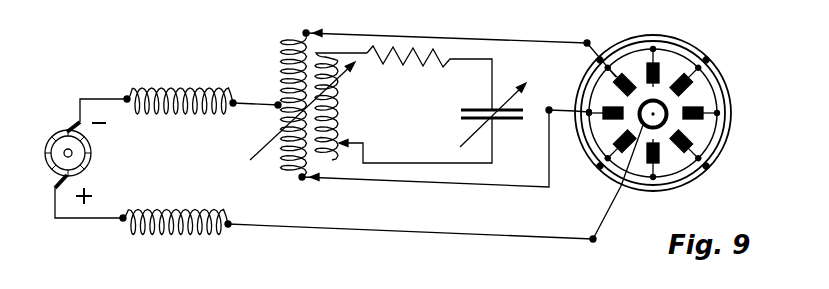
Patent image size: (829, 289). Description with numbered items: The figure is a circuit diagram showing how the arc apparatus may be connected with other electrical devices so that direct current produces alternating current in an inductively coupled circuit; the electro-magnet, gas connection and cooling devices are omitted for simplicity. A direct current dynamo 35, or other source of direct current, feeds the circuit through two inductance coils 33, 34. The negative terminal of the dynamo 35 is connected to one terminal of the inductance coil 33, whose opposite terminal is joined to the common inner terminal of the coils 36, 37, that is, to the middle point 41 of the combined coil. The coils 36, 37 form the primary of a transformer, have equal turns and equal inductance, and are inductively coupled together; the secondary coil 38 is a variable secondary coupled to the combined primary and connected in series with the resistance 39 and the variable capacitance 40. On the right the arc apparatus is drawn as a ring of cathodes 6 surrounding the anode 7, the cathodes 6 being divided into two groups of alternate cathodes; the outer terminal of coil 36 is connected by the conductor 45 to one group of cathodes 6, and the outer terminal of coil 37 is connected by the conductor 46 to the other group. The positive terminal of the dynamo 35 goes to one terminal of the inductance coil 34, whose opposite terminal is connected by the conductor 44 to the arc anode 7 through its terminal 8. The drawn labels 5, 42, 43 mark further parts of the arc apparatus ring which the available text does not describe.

The stator terminal / field winding connection 5 is at (590, 42).
The cathodes 6 is at (614, 86).
The anode 7 is at (660, 101).
The terminal 8 is at (600, 218).
The inductance coil 33 is at (178, 87).
The inductance coil 34 is at (178, 208).
The direct current dynamo 35 is at (91, 161).
The primary coil 36 is at (279, 55).
The primary coil 37 is at (279, 160).
The secondary coil 38 is at (340, 126).
The resistance 39 is at (415, 65).
The variable capacitance 40 is at (473, 108).
The point 41 is at (278, 104).
The stator outer ring 42 is at (728, 93).
The stator inner ring 43 is at (724, 108).
The conductor 44 is at (374, 231).
The conductor 45 is at (521, 38).
The conductor 46 is at (470, 185).